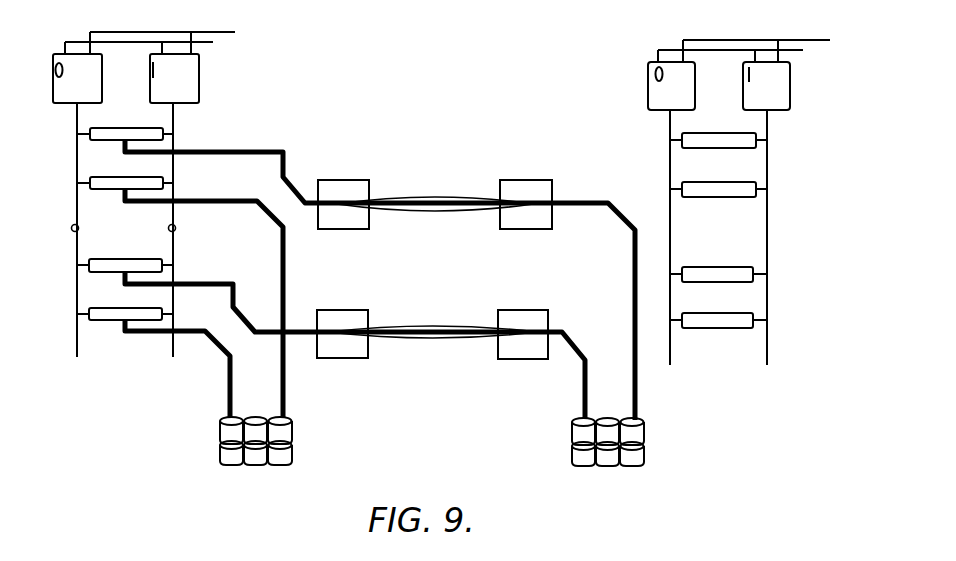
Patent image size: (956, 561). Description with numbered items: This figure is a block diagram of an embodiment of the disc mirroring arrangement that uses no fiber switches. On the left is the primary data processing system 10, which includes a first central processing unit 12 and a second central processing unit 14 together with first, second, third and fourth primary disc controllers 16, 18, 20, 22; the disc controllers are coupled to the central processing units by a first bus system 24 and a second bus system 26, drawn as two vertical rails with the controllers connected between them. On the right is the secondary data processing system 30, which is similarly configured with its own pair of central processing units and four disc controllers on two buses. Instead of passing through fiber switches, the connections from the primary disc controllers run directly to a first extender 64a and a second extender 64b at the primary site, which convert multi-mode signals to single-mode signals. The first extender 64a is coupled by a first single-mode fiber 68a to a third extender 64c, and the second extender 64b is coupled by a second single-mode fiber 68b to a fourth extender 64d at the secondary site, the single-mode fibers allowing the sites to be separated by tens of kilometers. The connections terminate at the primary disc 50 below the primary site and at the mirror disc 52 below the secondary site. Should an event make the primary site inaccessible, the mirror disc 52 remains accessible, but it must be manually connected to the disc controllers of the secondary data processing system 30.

The primary data processing system 10 is at (255, 63).
The first central processing unit 12 is at (92, 93).
The second central processing unit 14 is at (188, 93).
The first primary disc controller 16 is at (100, 128).
The second primary disc controller 18 is at (88, 177).
The third primary disc controller 20 is at (108, 259).
The fourth primary disc controller 22 is at (88, 308).
The first bus system 24 is at (79, 228).
The second bus system 26 is at (176, 228).
The secondary data processing system 30 is at (815, 73).
The primary disc 50 is at (294, 434).
The mirror disc 52 is at (647, 436).
The first extender 64a is at (340, 180).
The second extender 64b is at (330, 310).
The third extender 64c is at (528, 180).
The fourth extender 64d is at (523, 310).
The first single-mode fiber 68a is at (408, 217).
The second single-mode fiber 68b is at (407, 348).